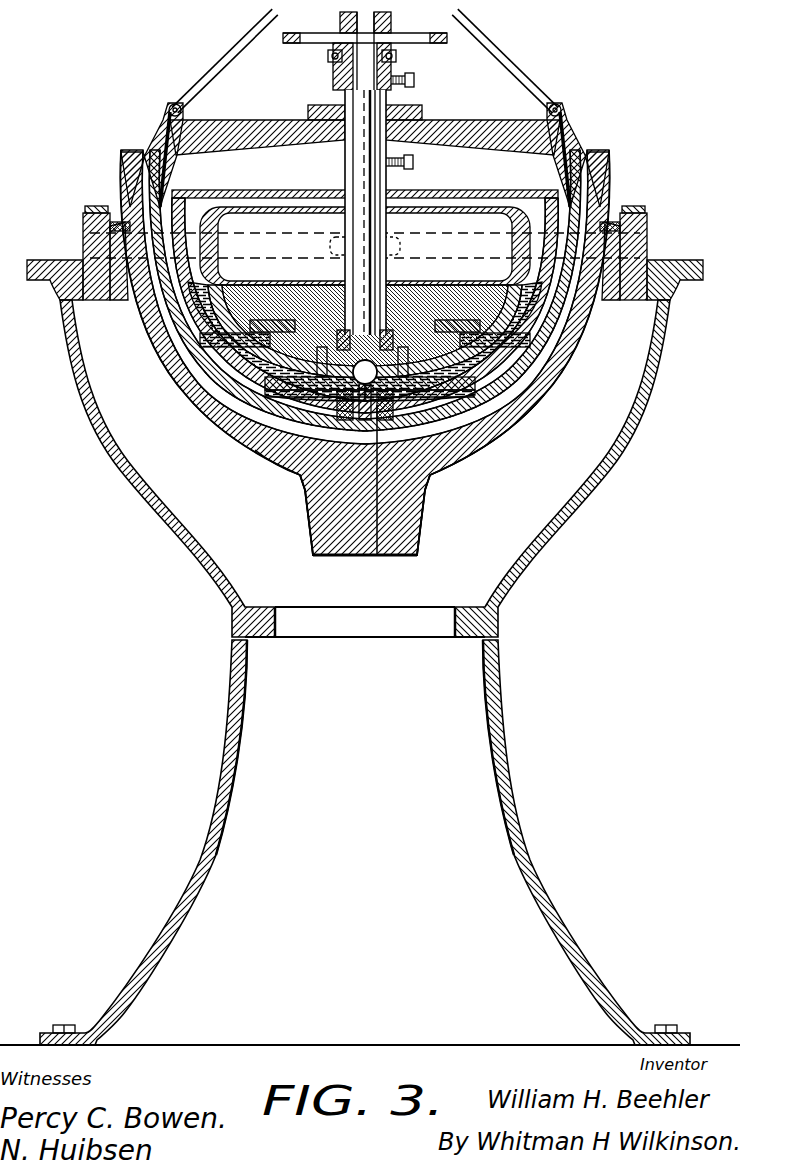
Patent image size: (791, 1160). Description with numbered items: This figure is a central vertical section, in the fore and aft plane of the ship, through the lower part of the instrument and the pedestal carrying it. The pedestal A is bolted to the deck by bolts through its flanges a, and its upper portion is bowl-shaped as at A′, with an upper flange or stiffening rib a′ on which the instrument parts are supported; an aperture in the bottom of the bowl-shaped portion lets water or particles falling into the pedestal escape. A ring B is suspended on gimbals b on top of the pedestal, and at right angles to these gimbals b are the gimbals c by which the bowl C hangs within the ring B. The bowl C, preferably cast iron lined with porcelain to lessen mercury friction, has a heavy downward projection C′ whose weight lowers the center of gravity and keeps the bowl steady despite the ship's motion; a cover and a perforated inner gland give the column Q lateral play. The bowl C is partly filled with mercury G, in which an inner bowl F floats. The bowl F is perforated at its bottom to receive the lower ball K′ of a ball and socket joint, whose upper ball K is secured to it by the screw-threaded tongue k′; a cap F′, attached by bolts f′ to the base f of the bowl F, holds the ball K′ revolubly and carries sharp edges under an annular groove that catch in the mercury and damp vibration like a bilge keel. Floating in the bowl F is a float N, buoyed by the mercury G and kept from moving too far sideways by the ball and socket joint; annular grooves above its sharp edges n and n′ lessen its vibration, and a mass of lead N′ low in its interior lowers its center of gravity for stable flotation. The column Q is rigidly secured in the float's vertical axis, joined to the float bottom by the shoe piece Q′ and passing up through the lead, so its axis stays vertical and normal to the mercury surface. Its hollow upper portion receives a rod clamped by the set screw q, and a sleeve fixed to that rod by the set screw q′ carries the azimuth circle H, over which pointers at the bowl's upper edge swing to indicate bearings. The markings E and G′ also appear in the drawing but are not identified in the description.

The pedestal A is at (470, 770).
The flanges a is at (55, 1033).
The upper flange or stiffening rib a′ is at (680, 264).
The bowl-shaped portion A′ is at (640, 440).
The ring B is at (640, 262).
The gimbals c is at (100, 210).
The bowl C is at (562, 372).
The downward projection C′ is at (450, 532).
The azimuth circle H is at (400, 37).
The column Q is at (388, 189).
The shoe piece Q′ is at (353, 357).
The set screw q is at (414, 162).
The set screw q′ is at (422, 78).
The space E is at (264, 186).
The inner bowl F is at (207, 372).
The cap F′ is at (422, 480).
The mercury G is at (242, 396).
The lining bottom G′ is at (276, 436).
The sharp edge n is at (170, 346).
The sharp edge n′ is at (254, 412).
The float N is at (440, 250).
The mass of lead N′ is at (445, 256).
The gimbals b is at (390, 250).
The upper ball K is at (365, 358).
The lower ball K′ is at (378, 557).
The screw-threaded tongue k′ is at (372, 412).
The base f is at (292, 447).
The bolts f′ is at (300, 482).